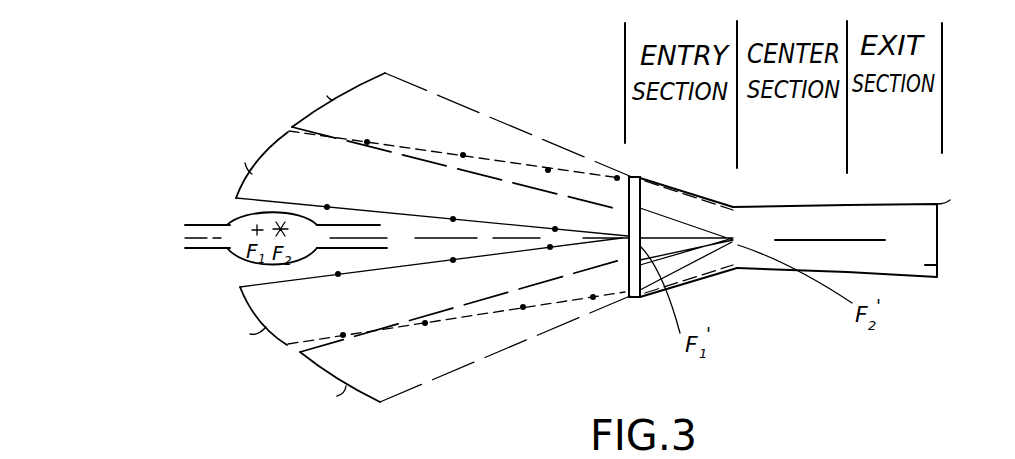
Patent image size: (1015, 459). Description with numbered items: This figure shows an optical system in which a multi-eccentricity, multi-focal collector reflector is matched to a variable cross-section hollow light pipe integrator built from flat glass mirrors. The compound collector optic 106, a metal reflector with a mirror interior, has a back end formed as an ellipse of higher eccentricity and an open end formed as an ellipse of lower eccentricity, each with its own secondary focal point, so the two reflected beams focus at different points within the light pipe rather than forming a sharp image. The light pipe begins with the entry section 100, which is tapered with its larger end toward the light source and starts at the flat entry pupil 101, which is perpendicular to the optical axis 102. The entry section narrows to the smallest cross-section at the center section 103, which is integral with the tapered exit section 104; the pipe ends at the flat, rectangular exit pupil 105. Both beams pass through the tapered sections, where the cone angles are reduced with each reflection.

The entry section 100 is at (678, 186).
The entry pupil 101 is at (628, 276).
The optical axis 102 is at (830, 240).
The center section 103 is at (776, 204).
The exit section 104 is at (937, 267).
The exit pupil 105 is at (962, 187).
The compound collector optic 106 is at (315, 84).